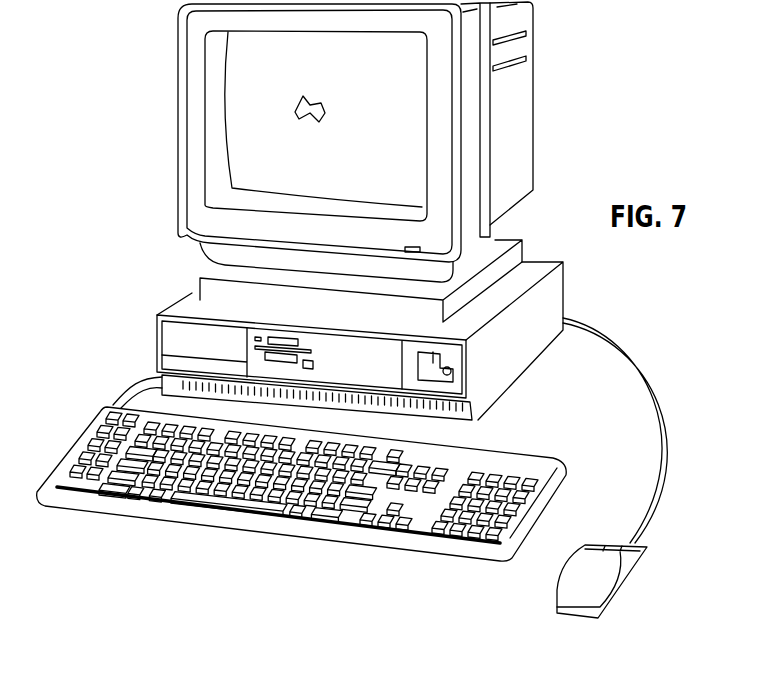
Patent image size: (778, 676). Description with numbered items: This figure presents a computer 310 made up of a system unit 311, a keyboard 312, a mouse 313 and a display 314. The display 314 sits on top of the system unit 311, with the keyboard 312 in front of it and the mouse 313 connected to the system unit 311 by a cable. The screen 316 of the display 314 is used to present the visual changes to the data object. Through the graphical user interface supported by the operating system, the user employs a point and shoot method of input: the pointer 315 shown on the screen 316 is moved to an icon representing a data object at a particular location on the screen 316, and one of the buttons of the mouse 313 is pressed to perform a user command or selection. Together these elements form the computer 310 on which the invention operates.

The computer 310 is at (128, 193).
The system unit 311 is at (157, 330).
The keyboard 312 is at (67, 507).
The mouse 313 is at (637, 577).
The display 314 is at (178, 115).
The pointer 315 is at (307, 107).
The screen 316 is at (280, 161).